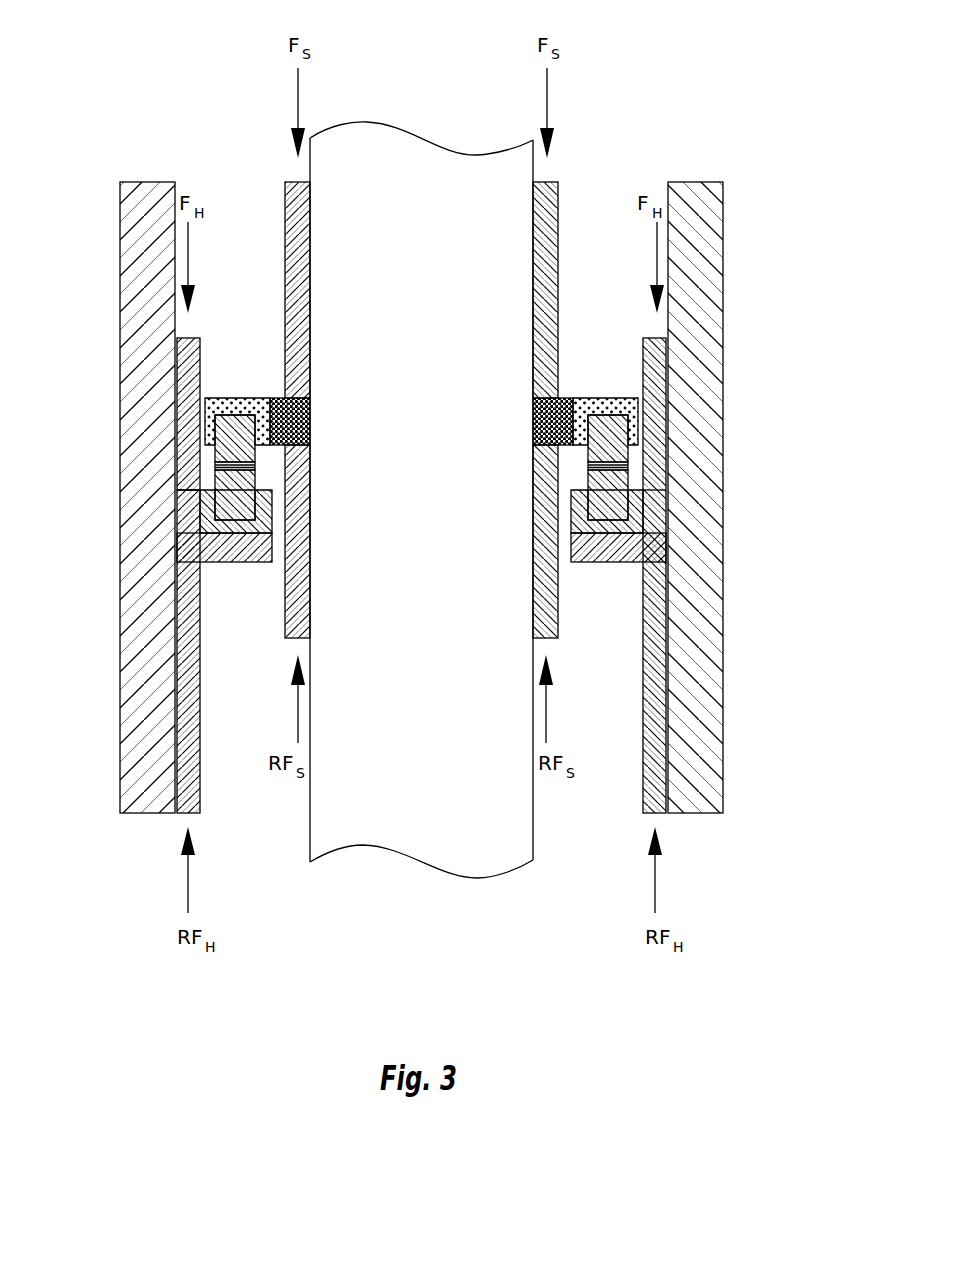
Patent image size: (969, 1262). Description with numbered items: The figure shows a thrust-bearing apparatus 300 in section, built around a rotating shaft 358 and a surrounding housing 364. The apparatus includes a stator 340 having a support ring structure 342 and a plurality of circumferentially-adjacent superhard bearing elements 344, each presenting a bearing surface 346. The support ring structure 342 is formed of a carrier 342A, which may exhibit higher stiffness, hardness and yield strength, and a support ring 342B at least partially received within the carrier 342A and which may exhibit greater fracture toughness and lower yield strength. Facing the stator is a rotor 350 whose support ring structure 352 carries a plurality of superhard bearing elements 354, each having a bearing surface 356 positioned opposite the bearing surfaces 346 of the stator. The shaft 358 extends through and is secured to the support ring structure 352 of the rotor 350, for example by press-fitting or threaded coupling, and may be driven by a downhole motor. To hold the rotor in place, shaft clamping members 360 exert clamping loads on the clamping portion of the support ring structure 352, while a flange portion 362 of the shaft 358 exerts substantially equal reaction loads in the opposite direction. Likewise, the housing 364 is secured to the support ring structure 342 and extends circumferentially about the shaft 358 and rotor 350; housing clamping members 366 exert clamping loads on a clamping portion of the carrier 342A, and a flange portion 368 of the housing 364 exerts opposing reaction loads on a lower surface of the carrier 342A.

The thrust-bearing apparatus 300 is at (189, 64).
The stator 340 is at (680, 565).
The support ring structure 342 is at (680, 545).
The carrier 342A is at (650, 517).
The support ring 342B is at (600, 487).
The superhard bearing elements 344 is at (600, 471).
The bearing surface 346 is at (600, 463).
The rotor 350 is at (197, 391).
The support ring structure 352 is at (203, 407).
The superhard bearing elements 354 is at (232, 462).
The bearing surface 356 is at (225, 475).
The shaft 358 is at (510, 265).
The shaft clamping members 360 is at (547, 282).
The flange portion 362 is at (552, 603).
The housing 364 is at (145, 686).
The housing clamping members 366 is at (183, 437).
The flange portion 368 is at (190, 606).